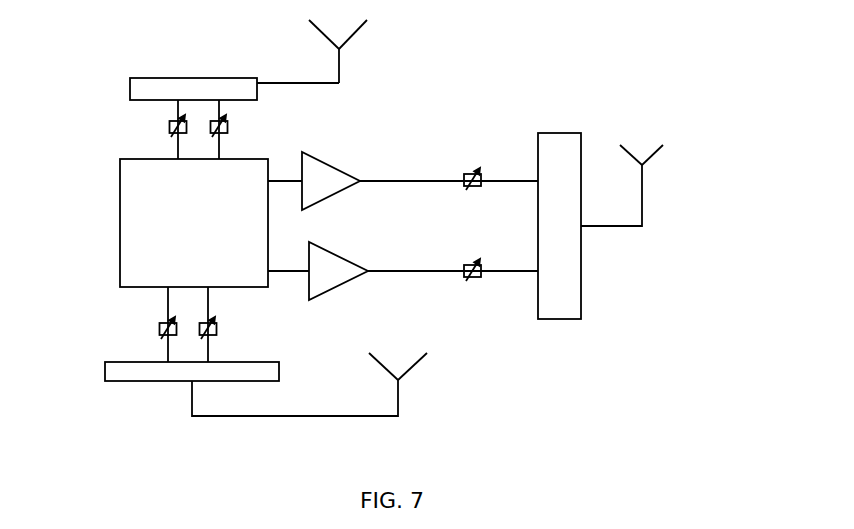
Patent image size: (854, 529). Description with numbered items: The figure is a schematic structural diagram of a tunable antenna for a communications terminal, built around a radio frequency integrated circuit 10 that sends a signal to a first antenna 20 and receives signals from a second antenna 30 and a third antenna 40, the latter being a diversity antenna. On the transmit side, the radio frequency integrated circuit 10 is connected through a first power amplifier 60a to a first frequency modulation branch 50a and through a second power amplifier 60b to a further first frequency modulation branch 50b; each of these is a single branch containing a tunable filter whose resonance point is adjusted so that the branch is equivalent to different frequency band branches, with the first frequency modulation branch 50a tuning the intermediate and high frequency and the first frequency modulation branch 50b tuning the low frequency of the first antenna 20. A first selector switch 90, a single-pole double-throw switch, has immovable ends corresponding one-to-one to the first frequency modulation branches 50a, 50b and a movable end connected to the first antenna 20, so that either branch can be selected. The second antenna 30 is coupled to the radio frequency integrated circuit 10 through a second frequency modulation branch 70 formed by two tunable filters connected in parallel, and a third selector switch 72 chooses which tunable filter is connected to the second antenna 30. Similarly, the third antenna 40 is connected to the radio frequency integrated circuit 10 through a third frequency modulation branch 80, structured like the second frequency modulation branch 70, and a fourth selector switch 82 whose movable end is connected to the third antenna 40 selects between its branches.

The radio frequency integrated circuit 10 is at (194, 223).
The first antenna 20 is at (644, 178).
The second antenna 30 is at (342, 63).
The third antenna 40 is at (400, 416).
The first frequency modulation branch 50a is at (510, 178).
The first frequency modulation branch 50b is at (490, 272).
The first power amplifier 60a is at (324, 187).
The second power amplifier 60b is at (333, 265).
The second frequency modulation branch 70 is at (146, 114).
The third selector switch 72 is at (152, 78).
The third frequency modulation branch 80 is at (167, 303).
The fourth selector switch 82 is at (147, 373).
The first selector switch 90 is at (560, 296).